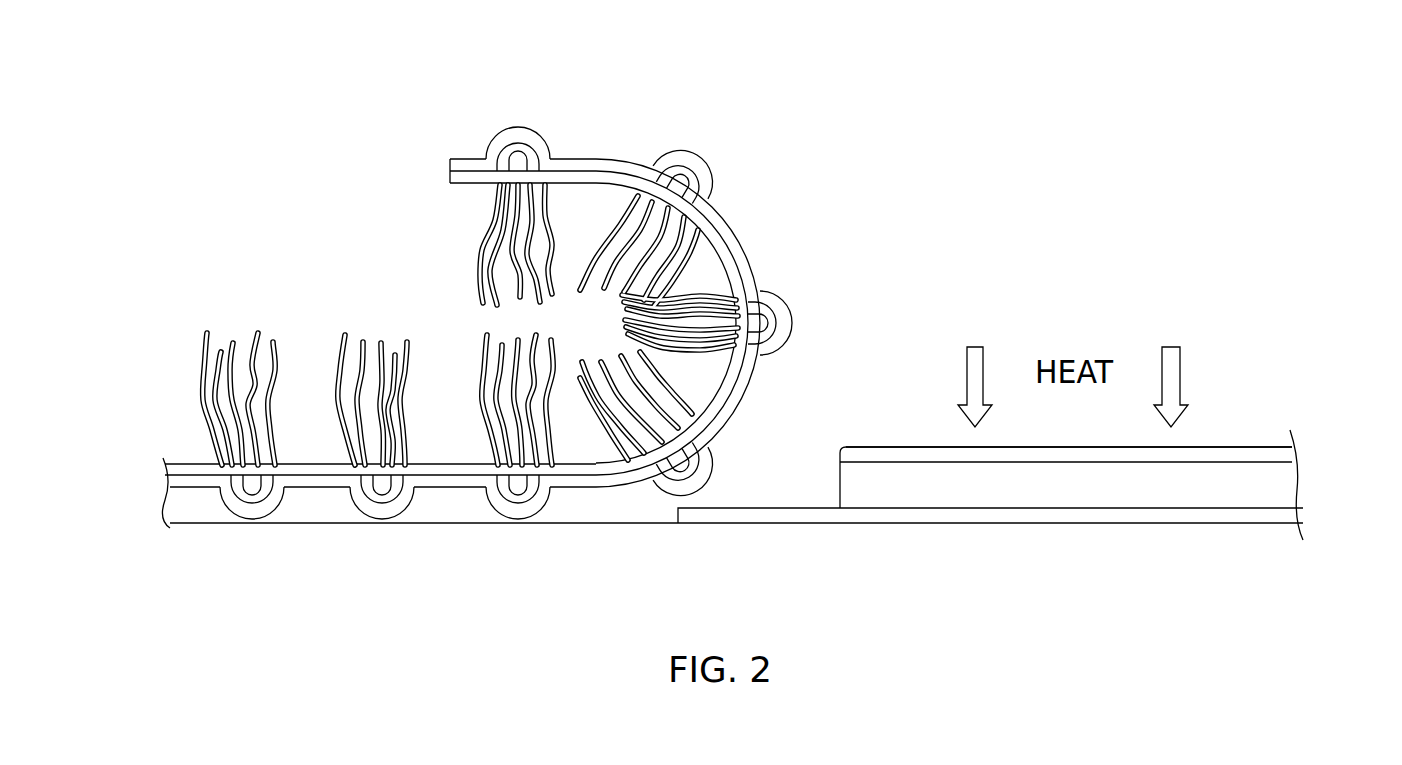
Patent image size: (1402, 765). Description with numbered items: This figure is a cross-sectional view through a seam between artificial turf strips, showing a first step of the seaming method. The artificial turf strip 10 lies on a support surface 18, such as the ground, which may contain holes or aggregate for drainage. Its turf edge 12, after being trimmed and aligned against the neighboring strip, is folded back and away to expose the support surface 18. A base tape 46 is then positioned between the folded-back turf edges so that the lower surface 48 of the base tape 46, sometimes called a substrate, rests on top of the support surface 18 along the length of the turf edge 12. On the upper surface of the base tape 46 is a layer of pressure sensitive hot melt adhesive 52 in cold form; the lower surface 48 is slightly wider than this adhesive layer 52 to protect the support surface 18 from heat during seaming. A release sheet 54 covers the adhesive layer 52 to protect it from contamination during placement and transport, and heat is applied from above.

The artificial turf strip 10 is at (478, 275).
The turf edge 12 is at (641, 160).
The support surface 18 is at (470, 527).
The base tape 46 is at (1031, 474).
The lower surface of base tape 48 is at (778, 512).
The layer of pressure sensitive hot melt adhesive 52 is at (1072, 490).
The release sheet 54 is at (1235, 447).